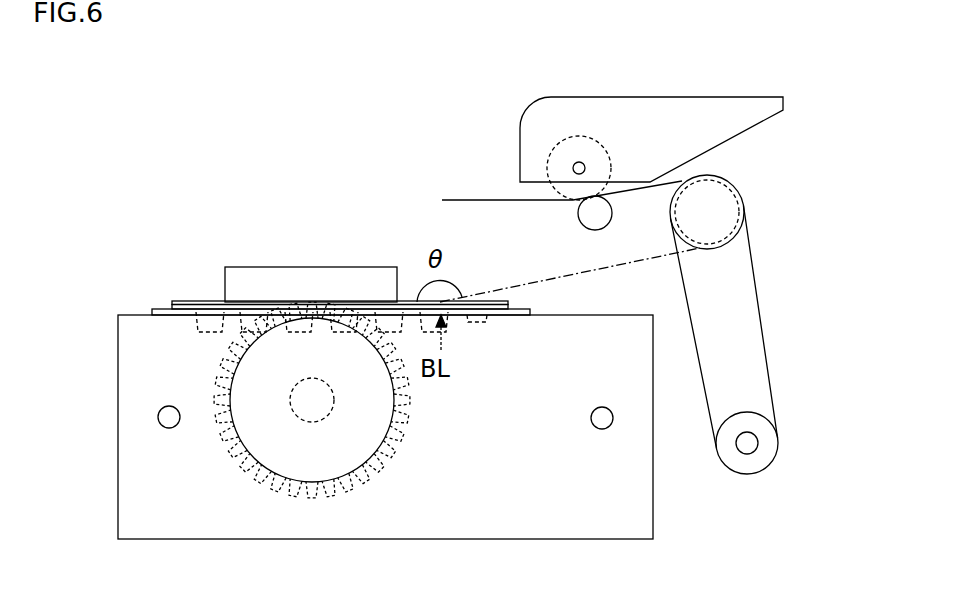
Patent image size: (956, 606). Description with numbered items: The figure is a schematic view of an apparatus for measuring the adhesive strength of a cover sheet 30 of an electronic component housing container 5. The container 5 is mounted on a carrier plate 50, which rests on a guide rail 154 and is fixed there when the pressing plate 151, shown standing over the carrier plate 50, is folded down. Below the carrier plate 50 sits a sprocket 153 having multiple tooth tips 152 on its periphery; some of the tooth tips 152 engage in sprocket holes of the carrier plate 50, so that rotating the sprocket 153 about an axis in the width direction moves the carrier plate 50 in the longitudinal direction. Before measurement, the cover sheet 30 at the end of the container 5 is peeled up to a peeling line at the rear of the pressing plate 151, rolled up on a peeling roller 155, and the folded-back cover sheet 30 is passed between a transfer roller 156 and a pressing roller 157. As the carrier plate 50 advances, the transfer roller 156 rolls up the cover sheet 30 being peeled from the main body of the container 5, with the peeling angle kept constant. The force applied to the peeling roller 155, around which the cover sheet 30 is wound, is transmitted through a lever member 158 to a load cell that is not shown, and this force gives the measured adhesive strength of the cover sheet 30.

The electronic component housing container 5 is at (182, 300).
The cover sheet 30 is at (465, 197).
The carrier plate 50 is at (163, 312).
The pressing plate 151 is at (248, 273).
The tooth tips 152 is at (230, 373).
The sprocket 153 is at (253, 420).
The guide rail 154 is at (142, 507).
The peeling roller 155 is at (727, 208).
The transfer roller 156 is at (600, 210).
The pressing roller 157 is at (567, 187).
The lever member 158 is at (740, 313).